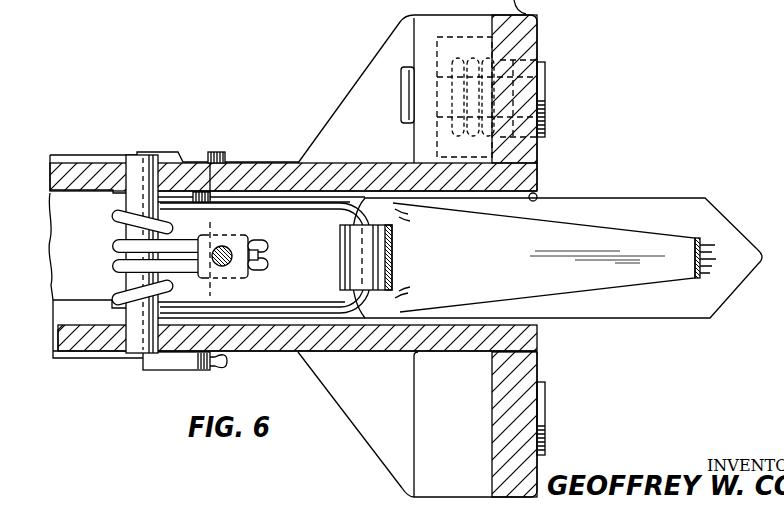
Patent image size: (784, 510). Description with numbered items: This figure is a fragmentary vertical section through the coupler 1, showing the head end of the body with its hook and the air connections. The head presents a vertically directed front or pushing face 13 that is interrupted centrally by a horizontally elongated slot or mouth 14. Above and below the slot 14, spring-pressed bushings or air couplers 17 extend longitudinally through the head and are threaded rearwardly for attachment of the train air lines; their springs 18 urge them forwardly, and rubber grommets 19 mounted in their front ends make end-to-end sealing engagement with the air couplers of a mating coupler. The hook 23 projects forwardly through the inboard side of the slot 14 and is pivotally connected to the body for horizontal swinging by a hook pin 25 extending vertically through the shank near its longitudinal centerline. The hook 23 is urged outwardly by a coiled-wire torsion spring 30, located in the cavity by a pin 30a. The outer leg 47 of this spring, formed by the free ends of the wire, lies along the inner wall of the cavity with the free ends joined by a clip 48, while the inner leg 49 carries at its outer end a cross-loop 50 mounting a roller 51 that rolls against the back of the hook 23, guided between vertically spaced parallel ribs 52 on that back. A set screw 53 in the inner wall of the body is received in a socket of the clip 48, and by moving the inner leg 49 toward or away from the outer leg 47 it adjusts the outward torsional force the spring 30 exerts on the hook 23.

The coupler 1 is at (546, 32).
The front or pushing face 13 is at (538, 352).
The slot, opening or mouth 14 is at (538, 197).
The spring-pressed bushings or air couplers 17 is at (401, 97).
The springs 18 is at (478, 61).
The rubber grommets 19 is at (545, 123).
The hook 23 is at (727, 215).
The pivot or hook pin 25 is at (222, 157).
The spring 30 is at (108, 265).
The pin 30a is at (145, 172).
The outer leg 47 is at (265, 241).
The clip 48 is at (242, 236).
The inner leg 49 is at (300, 302).
The cross-loop 50 is at (390, 257).
The roller 51 is at (343, 256).
The ribs 52 is at (401, 222).
The set screw 53 is at (224, 272).